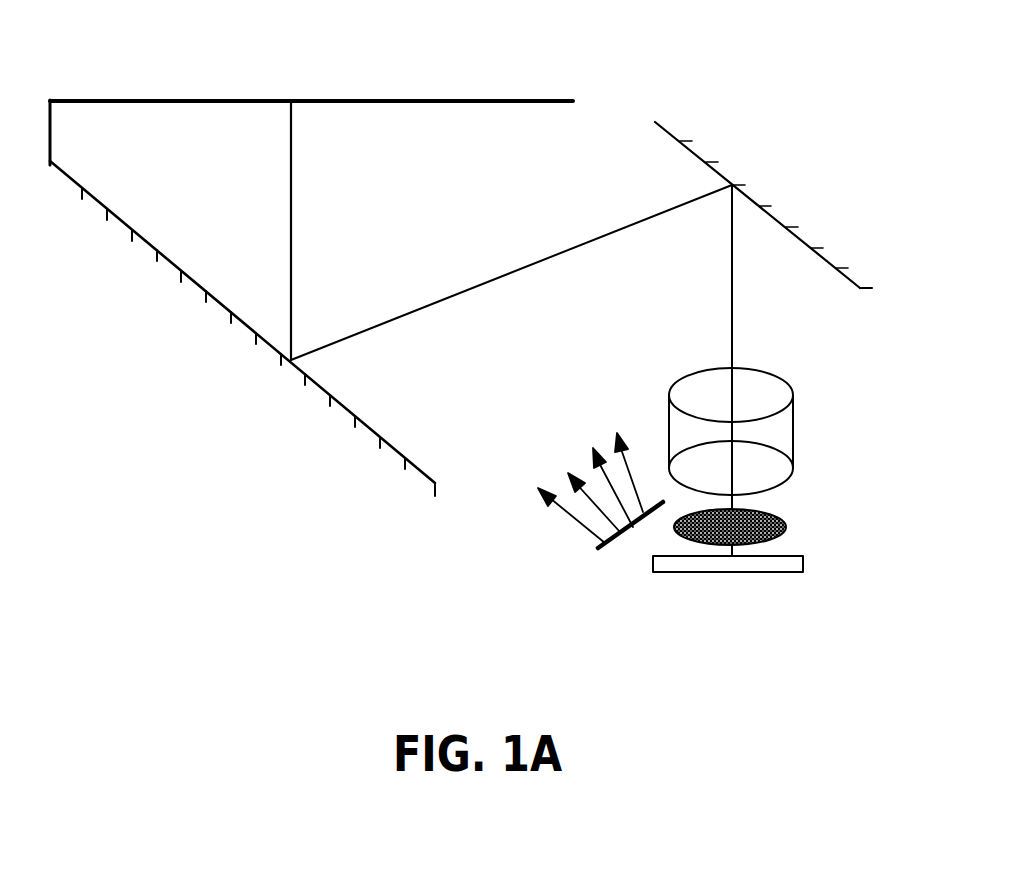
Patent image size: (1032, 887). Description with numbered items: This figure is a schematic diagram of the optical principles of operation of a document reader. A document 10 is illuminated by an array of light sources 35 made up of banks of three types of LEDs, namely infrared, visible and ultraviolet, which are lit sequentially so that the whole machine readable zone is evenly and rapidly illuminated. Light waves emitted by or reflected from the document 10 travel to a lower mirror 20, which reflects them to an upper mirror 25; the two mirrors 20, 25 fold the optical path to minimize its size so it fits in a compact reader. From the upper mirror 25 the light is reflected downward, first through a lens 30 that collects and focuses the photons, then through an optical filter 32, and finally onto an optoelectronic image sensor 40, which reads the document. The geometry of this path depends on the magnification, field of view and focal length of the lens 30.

The document 10 is at (380, 100).
The lower mirror 20 is at (241, 323).
The upper mirror 25 is at (720, 172).
The lens 30 is at (796, 458).
The optical filter 32 is at (780, 516).
The array of light sources 35 is at (627, 535).
The optoelectronic image sensor 40 is at (763, 573).